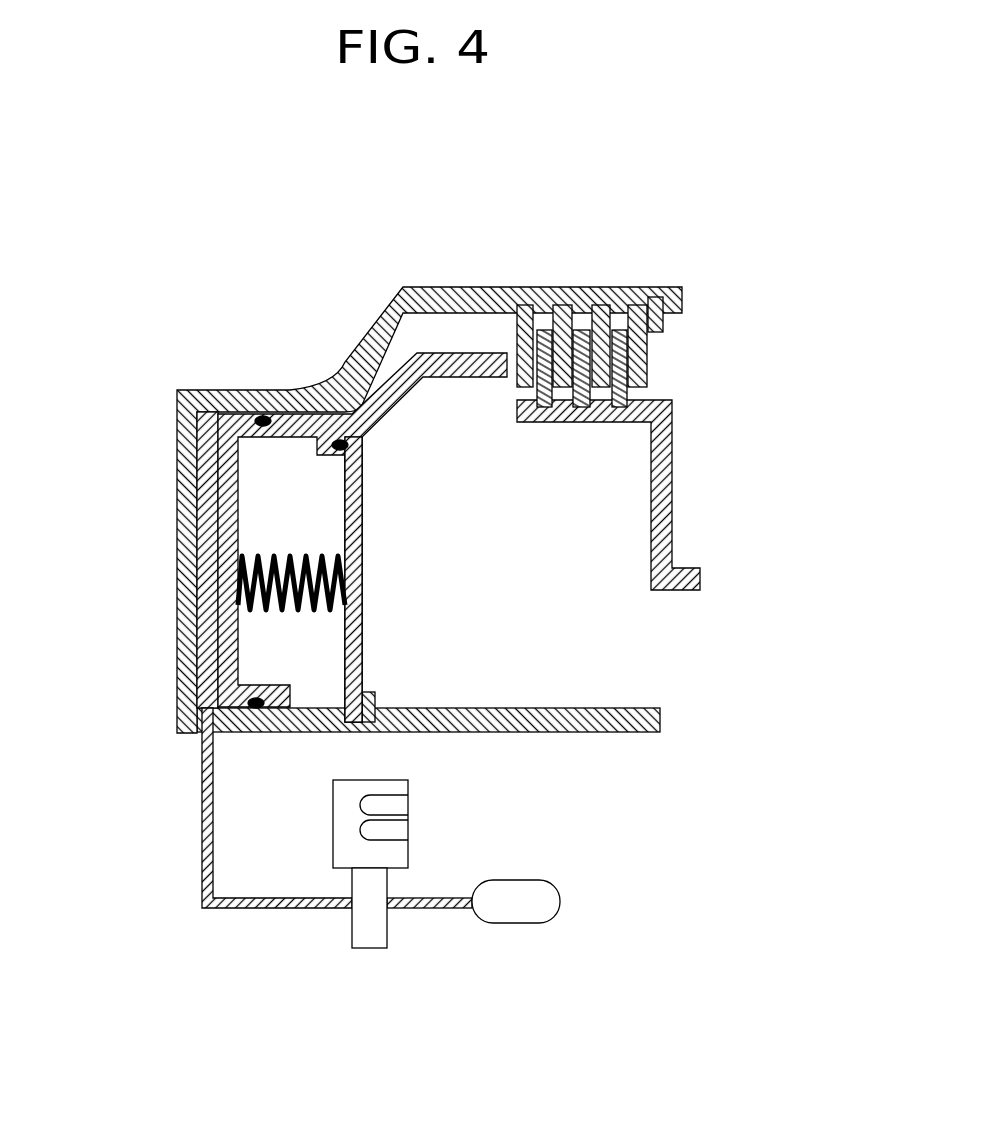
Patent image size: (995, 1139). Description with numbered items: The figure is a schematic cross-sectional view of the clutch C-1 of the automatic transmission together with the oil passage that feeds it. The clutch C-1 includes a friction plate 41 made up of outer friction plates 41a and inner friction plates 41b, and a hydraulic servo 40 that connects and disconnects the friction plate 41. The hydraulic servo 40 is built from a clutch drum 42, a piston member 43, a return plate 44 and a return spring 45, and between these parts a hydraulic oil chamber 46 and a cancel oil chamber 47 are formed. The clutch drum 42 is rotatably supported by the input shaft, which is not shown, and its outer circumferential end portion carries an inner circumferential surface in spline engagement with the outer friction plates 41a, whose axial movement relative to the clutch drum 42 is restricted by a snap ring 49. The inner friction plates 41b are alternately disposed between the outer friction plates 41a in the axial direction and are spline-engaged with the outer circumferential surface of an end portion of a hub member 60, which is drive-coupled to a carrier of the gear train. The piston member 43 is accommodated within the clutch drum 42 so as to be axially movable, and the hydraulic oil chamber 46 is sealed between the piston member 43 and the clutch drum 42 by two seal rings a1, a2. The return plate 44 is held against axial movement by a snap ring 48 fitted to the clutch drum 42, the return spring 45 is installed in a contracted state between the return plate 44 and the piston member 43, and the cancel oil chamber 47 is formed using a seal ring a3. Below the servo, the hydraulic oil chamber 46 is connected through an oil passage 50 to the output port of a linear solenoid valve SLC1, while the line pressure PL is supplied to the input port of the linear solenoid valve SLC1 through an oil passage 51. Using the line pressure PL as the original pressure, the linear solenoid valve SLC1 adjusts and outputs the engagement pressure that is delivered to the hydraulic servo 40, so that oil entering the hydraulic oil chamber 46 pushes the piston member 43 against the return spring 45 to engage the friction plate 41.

The hydraulic servo 40 is at (367, 510).
The friction plate 41 is at (576, 280).
The outer friction plates 41a is at (565, 303).
The inner friction plates 41b is at (584, 318).
The clutch drum 42 is at (178, 505).
The piston member 43 is at (235, 508).
The return plate 44 is at (366, 510).
The return spring 45 is at (361, 612).
The hydraulic oil chamber 46 is at (197, 607).
The cancel oil chamber 47 is at (330, 656).
The snap ring 48 is at (376, 700).
The snap ring 49 is at (664, 319).
The oil passage 50 is at (214, 768).
The oil passage 51 is at (428, 895).
The hub member 60 is at (650, 490).
The clutch C-1 is at (565, 372).
The linear solenoid valve SLC1 is at (405, 770).
The line pressure PL is at (516, 901).
The seal ring a1 is at (264, 697).
The seal ring a2 is at (263, 428).
The seal ring a3 is at (336, 458).